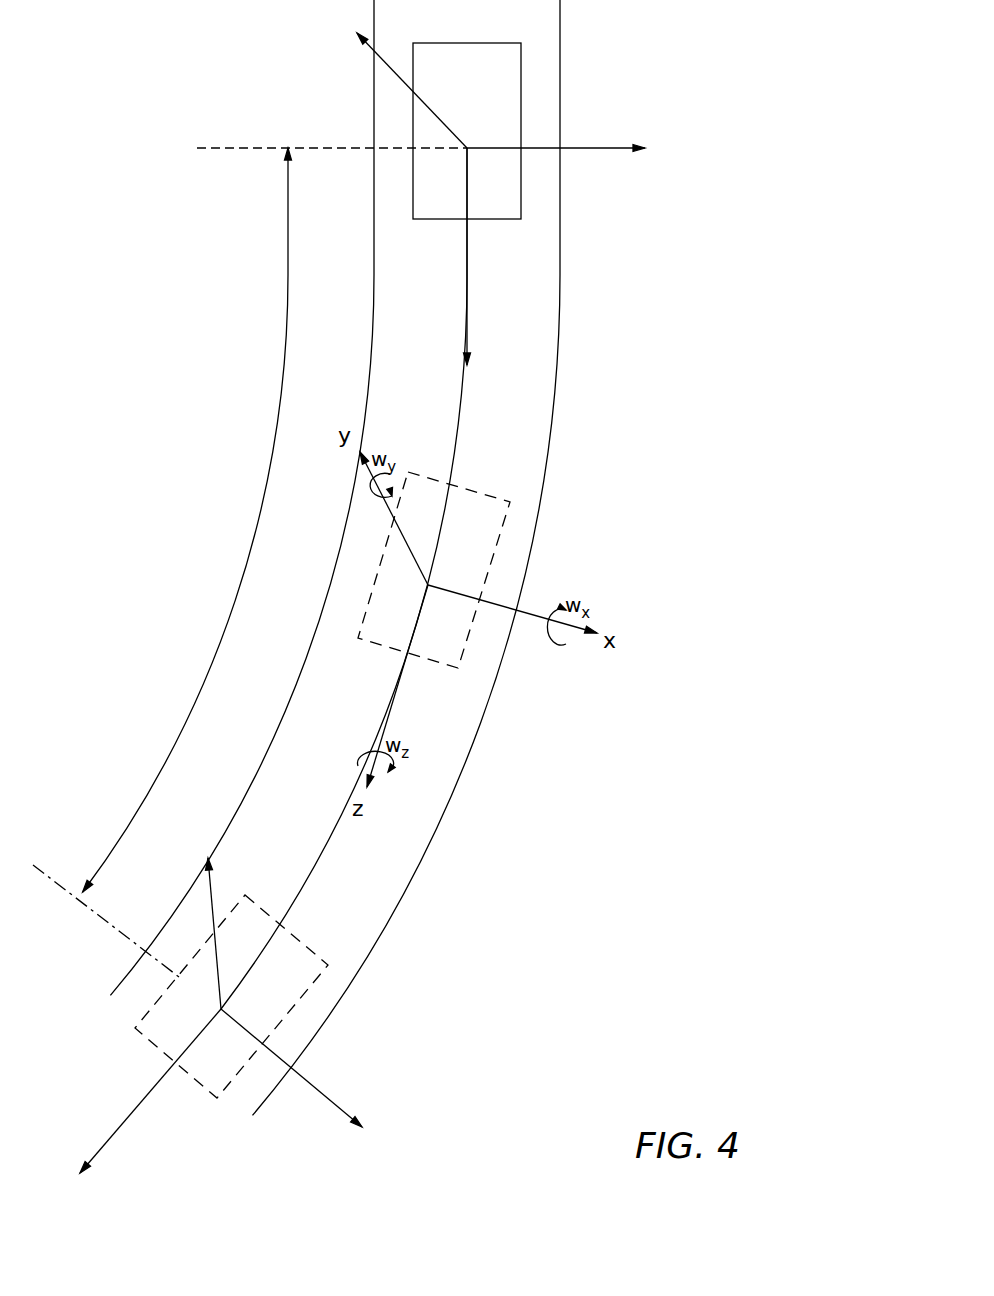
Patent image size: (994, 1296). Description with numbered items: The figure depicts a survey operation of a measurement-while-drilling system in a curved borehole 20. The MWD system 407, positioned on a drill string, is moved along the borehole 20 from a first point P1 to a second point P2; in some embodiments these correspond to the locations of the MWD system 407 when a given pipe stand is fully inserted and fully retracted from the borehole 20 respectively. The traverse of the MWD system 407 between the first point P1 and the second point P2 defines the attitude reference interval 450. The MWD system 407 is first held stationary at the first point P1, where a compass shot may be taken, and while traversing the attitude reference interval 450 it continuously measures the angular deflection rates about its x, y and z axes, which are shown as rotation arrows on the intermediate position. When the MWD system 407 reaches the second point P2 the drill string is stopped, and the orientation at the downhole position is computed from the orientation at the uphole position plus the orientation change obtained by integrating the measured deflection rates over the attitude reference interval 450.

The borehole 20 is at (460, 780).
The MWD system 407 is at (521, 82).
The attitude reference interval 450 is at (250, 560).
The first point P1 is at (165, 975).
The second point P2 is at (490, 165).